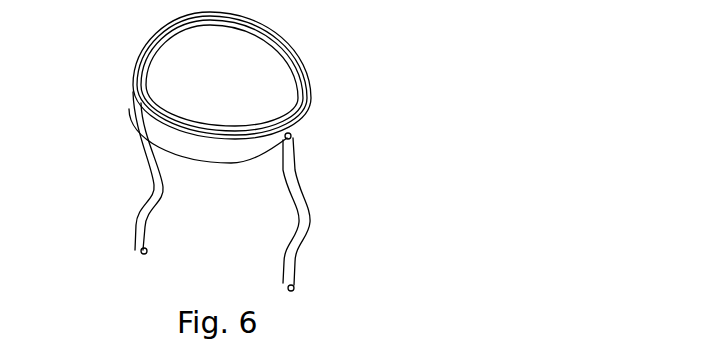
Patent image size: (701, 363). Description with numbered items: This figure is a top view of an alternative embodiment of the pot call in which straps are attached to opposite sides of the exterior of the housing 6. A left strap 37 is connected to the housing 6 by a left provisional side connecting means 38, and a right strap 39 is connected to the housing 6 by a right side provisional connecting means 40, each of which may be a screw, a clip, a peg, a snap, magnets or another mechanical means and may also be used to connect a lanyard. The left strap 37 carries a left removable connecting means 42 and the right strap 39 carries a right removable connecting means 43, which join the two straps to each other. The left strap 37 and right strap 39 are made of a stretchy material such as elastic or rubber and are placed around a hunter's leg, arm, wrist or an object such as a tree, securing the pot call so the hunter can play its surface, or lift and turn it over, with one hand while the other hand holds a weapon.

The housing 6 is at (223, 150).
The left strap 37 is at (143, 142).
The left provisional side connecting means 38 is at (140, 82).
The right strap 39 is at (293, 178).
The right side provisional connecting means 40 is at (292, 137).
The left removable connecting means 42 is at (141, 250).
The right removable connecting means 43 is at (294, 288).